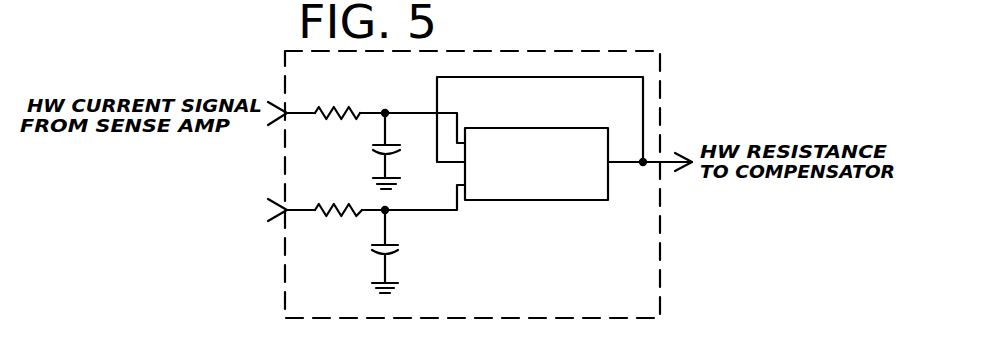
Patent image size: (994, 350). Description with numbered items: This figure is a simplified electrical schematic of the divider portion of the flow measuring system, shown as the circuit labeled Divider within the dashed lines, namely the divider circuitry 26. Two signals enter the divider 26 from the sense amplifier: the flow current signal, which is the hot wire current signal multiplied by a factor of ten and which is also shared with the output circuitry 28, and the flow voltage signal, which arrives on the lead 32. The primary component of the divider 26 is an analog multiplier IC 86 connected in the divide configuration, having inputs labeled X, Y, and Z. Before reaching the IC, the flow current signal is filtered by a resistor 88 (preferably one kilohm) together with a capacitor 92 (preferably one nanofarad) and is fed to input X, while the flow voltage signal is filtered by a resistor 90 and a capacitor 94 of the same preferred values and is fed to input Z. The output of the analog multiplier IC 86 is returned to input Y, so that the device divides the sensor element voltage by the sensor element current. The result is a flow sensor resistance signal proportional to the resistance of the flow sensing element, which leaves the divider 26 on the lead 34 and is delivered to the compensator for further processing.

The divider circuitry 26 is at (535, 50).
The output circuitry 28 is at (298, 113).
The lead 32 is at (300, 212).
The lead 34 is at (665, 165).
The analog multiplier IC 86 is at (549, 202).
The resistor 88 is at (348, 108).
The resistor 90 is at (337, 218).
The capacitor 92 is at (396, 155).
The capacitor 94 is at (396, 255).